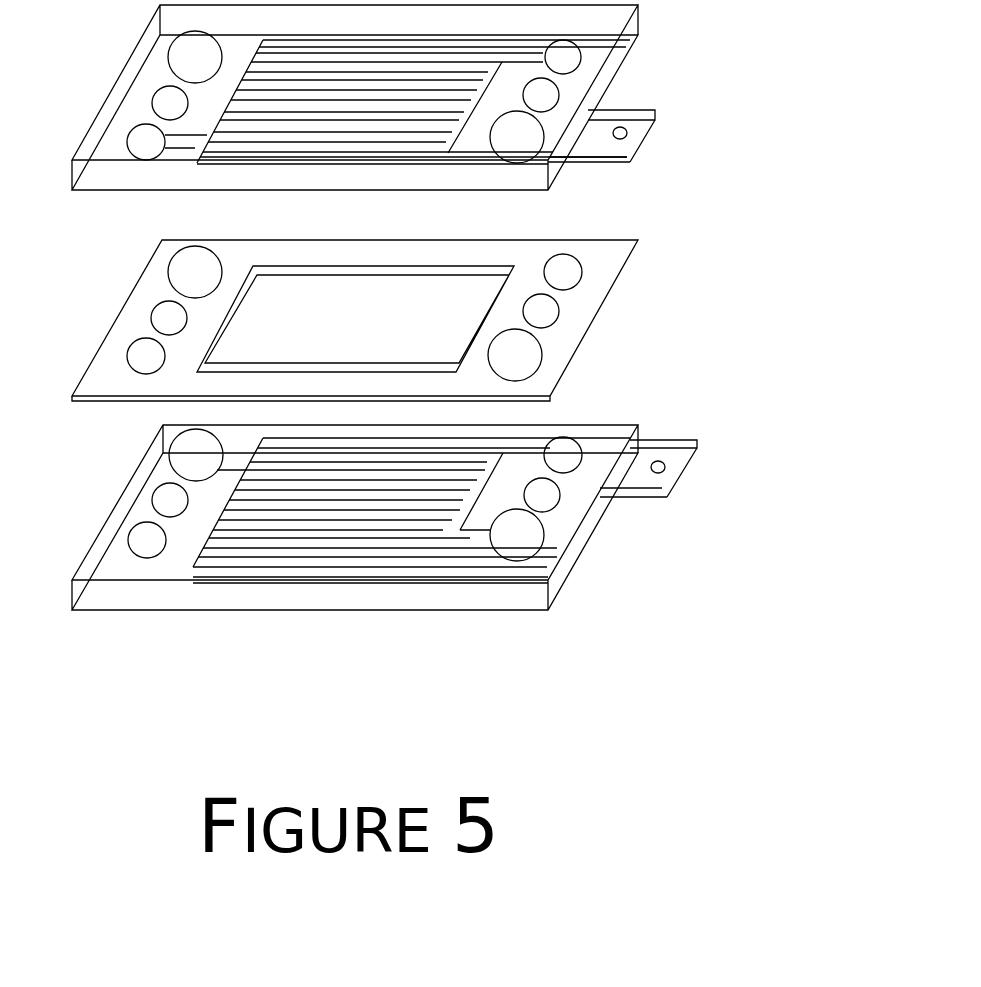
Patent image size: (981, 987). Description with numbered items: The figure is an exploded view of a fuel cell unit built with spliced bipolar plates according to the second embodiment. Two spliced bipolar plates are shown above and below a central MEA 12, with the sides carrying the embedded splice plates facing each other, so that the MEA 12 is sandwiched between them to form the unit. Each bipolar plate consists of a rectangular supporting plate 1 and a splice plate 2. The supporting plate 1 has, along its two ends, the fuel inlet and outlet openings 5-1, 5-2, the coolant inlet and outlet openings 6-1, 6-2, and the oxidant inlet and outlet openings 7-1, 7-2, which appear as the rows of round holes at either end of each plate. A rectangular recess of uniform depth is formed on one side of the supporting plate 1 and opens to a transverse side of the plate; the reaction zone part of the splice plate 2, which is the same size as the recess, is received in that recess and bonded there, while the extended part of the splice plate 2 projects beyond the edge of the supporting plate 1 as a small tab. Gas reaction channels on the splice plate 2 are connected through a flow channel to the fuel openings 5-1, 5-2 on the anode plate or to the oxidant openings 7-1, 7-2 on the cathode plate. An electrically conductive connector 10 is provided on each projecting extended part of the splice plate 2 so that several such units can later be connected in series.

The supporting plate 1 is at (142, 87).
The splice plate 2 is at (613, 60).
The electrically conductive connector 10 is at (622, 135).
The MEA 12 is at (133, 317).
The fuel inlet opening 5-1 is at (183, 460).
The fuel outlet opening 5-2 is at (523, 543).
The coolant inlet opening 6-1 is at (543, 505).
The coolant outlet opening 6-2 is at (158, 500).
The oxidant inlet opening 7-1 is at (562, 452).
The oxidant outlet opening 7-2 is at (135, 538).